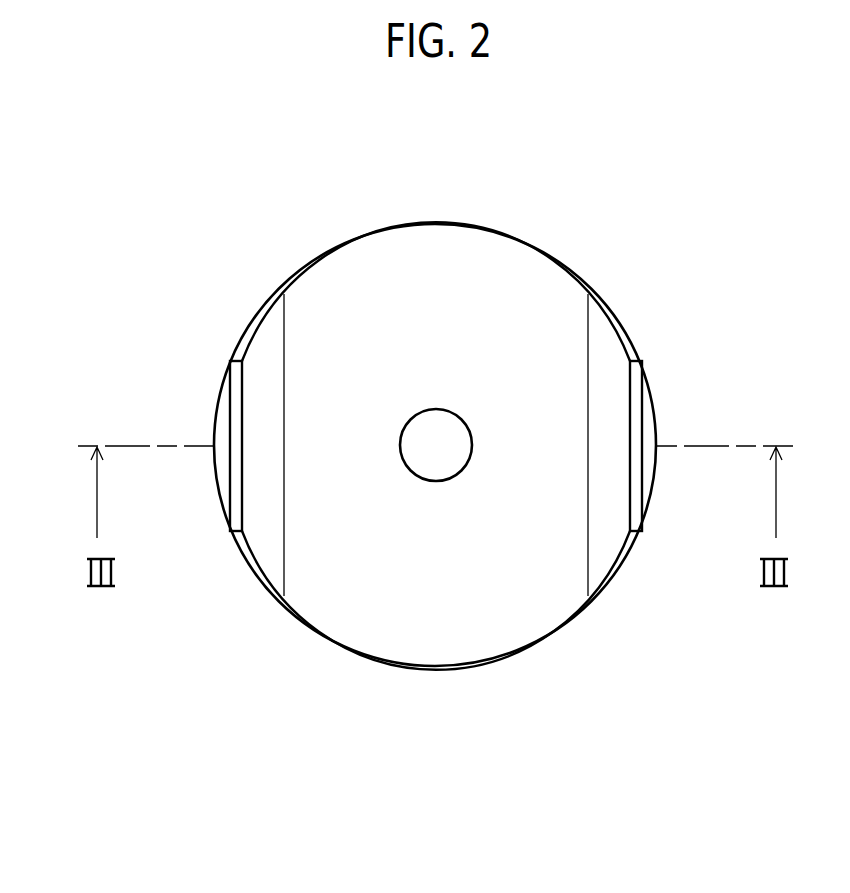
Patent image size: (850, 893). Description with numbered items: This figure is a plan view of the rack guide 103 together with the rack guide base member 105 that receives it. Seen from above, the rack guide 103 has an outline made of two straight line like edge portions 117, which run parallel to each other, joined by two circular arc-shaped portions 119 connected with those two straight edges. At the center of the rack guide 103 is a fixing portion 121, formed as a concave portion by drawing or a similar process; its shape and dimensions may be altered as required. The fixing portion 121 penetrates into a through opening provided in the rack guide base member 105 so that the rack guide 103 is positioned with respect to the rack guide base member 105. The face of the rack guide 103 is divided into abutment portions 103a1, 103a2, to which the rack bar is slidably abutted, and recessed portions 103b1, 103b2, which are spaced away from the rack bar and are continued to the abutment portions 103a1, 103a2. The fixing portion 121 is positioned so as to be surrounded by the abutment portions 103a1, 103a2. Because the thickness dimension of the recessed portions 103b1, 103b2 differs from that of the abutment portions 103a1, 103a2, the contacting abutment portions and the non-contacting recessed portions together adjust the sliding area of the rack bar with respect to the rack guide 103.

The rack guide 103 is at (400, 600).
The abutment portion 103a1 is at (525, 583).
The abutment portion 103a2 is at (363, 287).
The recessed portion 103b1 is at (603, 527).
The recessed portion 103b2 is at (267, 363).
The rack guide base member 105 is at (227, 476).
The straight line like edge portion 117 is at (237, 403).
The circular arc-shaped portion 119 is at (488, 227).
The fixing portion 121 is at (453, 453).